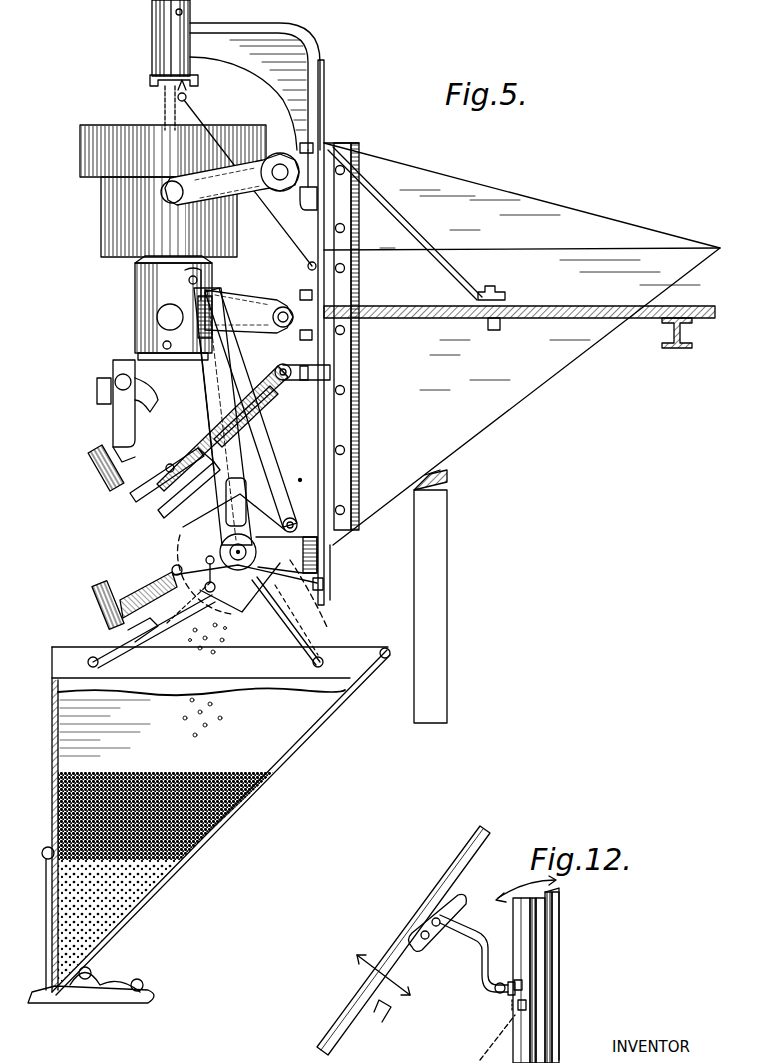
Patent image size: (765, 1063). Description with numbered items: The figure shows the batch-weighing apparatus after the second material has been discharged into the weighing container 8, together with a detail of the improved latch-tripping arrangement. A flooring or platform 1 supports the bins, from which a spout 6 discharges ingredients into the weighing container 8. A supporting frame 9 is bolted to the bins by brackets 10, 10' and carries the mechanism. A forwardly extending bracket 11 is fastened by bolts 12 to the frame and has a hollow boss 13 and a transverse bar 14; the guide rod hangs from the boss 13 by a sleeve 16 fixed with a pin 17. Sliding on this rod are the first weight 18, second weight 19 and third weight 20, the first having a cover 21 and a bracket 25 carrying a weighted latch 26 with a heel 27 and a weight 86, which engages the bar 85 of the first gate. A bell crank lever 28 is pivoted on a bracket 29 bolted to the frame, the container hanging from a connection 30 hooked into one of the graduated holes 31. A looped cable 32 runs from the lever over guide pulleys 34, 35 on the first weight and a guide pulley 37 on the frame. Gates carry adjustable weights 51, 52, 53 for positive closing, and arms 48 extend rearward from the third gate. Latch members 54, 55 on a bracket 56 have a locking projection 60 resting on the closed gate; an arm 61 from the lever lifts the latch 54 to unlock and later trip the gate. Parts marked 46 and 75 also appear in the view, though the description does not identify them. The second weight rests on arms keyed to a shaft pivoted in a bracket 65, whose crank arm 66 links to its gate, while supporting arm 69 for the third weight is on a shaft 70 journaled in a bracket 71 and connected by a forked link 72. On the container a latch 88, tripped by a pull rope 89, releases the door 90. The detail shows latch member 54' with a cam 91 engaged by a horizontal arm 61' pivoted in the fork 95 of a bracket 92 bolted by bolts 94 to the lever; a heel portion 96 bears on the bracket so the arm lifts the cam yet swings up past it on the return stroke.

In FIG. 5, the flooring or platform 1 is at (600, 312).
In FIG. 5, the spout 6 is at (330, 472).
In FIG. 5, the weighing container 8 is at (285, 760).
In FIG. 5, the supporting frame 9 is at (325, 410).
In FIG. 5, the bracket 10 is at (522, 344).
In FIG. 5, the bracket 10' is at (431, 242).
In FIG. 5, the forwardly extending bracket 11 is at (292, 60).
In FIG. 5, the bolts 12 is at (345, 178).
In FIG. 5, the hollow boss 13 is at (170, 52).
In FIG. 5, the transverse bar 14 is at (150, 82).
In FIG. 5, the sleeve 16 is at (176, 12).
In FIG. 5, the pin 17 is at (171, 22).
In FIG. 5, the first weight 18 is at (137, 303).
In FIG. 5, the second weight 19 is at (101, 222).
In FIG. 5, the third weight 20 is at (80, 150).
In FIG. 5, the cover 21 is at (140, 268).
In FIG. 5, the bracket 25 is at (114, 378).
In FIG. 5, the weighted latch 26 is at (114, 440).
In FIG. 5, the heel 27 is at (140, 405).
In FIG. 5, the bell crank lever 28 is at (232, 455).
In FIG. 12, the bell crank lever 28 is at (560, 920).
In FIG. 5, the bracket 29 is at (280, 565).
In FIG. 5, the connection 30 is at (126, 632).
In FIG. 5, the holes 31 is at (172, 568).
In FIG. 5, the looped cable 32 is at (204, 112).
In FIG. 5, the guide pulley 34 is at (158, 320).
In FIG. 5, the guide pulley 35 is at (163, 345).
In FIG. 5, the guide pulley 37 is at (308, 263).
In FIG. 5, the plate 46 is at (301, 481).
In FIG. 5, the arms 48 is at (312, 605).
In FIG. 5, the adjustable weight 51 is at (165, 618).
In FIG. 5, the adjustable weight 52 is at (96, 600).
In FIG. 5, the adjustable weight 53 is at (108, 486).
In FIG. 5, the latch member 54 is at (224, 415).
In FIG. 12, the latch member 54' is at (403, 940).
In FIG. 5, the latch member 55 is at (272, 395).
In FIG. 5, the bracket 56 is at (312, 372).
In FIG. 5, the locking projection 60 is at (160, 495).
In FIG. 5, the arm 61 is at (251, 410).
In FIG. 12, the horizontal arm 61' is at (466, 961).
In FIG. 5, the bracket 65 is at (312, 300).
In FIG. 5, the crank arm 66 is at (250, 312).
In FIG. 5, the supporting arm 69 is at (175, 195).
In FIG. 5, the shaft 70 is at (290, 165).
In FIG. 5, the bracket 71 is at (318, 162).
In FIG. 5, the forked link 72 is at (200, 282).
In FIG. 5, the guide bar 75 is at (208, 438).
In FIG. 5, the bar 85 is at (160, 588).
In FIG. 5, the weight 86 is at (100, 400).
In FIG. 5, the latch 88 is at (80, 1000).
In FIG. 5, the pull rope 89 is at (143, 983).
In FIG. 5, the door 90 is at (48, 908).
In FIG. 12, the cam 91 is at (434, 942).
In FIG. 12, the bracket 92 is at (498, 997).
In FIG. 12, the bolts 94 is at (524, 985).
In FIG. 12, the fork 95 is at (510, 982).
In FIG. 12, the heel portion 96 is at (505, 1012).